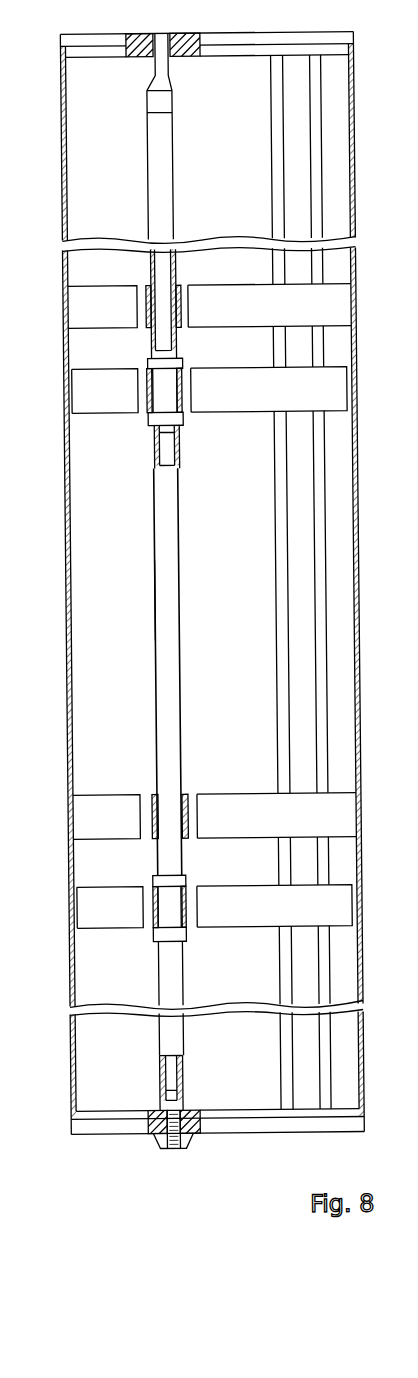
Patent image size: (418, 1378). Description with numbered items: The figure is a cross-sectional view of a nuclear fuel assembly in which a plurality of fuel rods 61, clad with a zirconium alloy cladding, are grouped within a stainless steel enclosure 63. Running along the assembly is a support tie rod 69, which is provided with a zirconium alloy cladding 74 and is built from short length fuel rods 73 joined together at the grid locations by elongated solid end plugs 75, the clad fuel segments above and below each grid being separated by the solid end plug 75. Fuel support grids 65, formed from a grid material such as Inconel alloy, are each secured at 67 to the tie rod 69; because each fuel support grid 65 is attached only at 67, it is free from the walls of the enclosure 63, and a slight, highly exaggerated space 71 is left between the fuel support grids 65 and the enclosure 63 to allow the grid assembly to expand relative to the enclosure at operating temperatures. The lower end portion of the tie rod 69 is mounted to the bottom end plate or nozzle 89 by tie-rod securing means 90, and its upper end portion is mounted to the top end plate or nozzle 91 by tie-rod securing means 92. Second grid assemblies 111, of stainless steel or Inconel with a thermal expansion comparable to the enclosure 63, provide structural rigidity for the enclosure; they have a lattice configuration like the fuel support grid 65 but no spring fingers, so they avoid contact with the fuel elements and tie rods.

The fuel rods 61 is at (285, 635).
The enclosure 63 is at (66, 152).
The fuel support grid 65 is at (337, 390).
The securing location 67 is at (180, 419).
The support tie rod 69 is at (118, 576).
The space 71 is at (72, 412).
The short length fuel rods 73 is at (158, 643).
The zirconium alloy cladding 74 is at (159, 602).
The elongated solid end plug 75 is at (167, 387).
The bottom end plate 89 is at (327, 1125).
The tie-rod securing means 90 is at (158, 1148).
The top end plate 91 is at (238, 33).
The tie-rod securing means 92 is at (157, 103).
The second grid assembly 111 is at (78, 307).